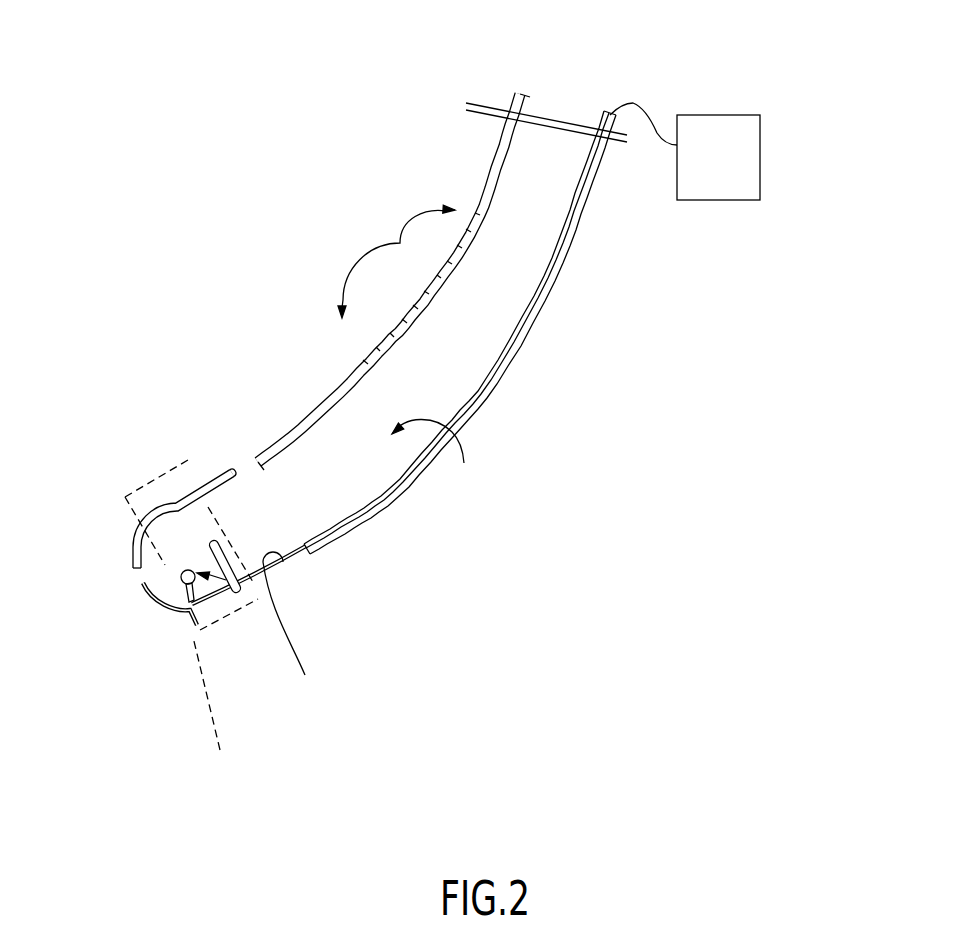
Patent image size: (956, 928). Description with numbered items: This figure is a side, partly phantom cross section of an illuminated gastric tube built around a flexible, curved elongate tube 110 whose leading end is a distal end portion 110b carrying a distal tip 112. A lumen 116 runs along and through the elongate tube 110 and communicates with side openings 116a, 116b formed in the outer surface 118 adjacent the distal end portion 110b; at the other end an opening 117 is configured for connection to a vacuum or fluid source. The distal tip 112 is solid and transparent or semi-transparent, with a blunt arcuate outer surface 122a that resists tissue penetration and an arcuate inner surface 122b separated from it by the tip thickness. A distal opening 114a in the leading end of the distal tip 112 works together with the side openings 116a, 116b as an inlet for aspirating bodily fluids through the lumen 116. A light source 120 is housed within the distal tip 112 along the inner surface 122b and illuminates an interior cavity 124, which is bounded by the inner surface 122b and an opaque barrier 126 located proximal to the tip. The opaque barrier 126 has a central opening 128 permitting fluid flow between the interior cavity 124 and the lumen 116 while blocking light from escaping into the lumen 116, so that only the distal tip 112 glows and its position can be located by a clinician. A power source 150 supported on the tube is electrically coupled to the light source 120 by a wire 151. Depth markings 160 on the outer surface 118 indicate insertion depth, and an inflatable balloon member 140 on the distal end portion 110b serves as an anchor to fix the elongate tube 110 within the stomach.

The elongate tube 110 is at (533, 400).
The distal end portion 110b is at (337, 393).
The distal tip 112 is at (168, 627).
The distal opening 114a is at (129, 584).
The lumen 116 is at (450, 437).
The side opening 116a is at (298, 571).
The side opening 116b is at (242, 457).
The opening 117 is at (563, 98).
The outer surface 118 is at (395, 494).
The light source 120 is at (228, 586).
The outer surface 122a is at (133, 539).
The inner surface 122b is at (157, 532).
The interior cavity 124 is at (165, 556).
The opaque barrier 126 is at (162, 535).
The central opening 128 is at (218, 536).
The inflatable balloon member 140 is at (225, 698).
The power source 150 is at (760, 157).
The wire 151 is at (640, 105).
The depth markings 160 is at (409, 284).